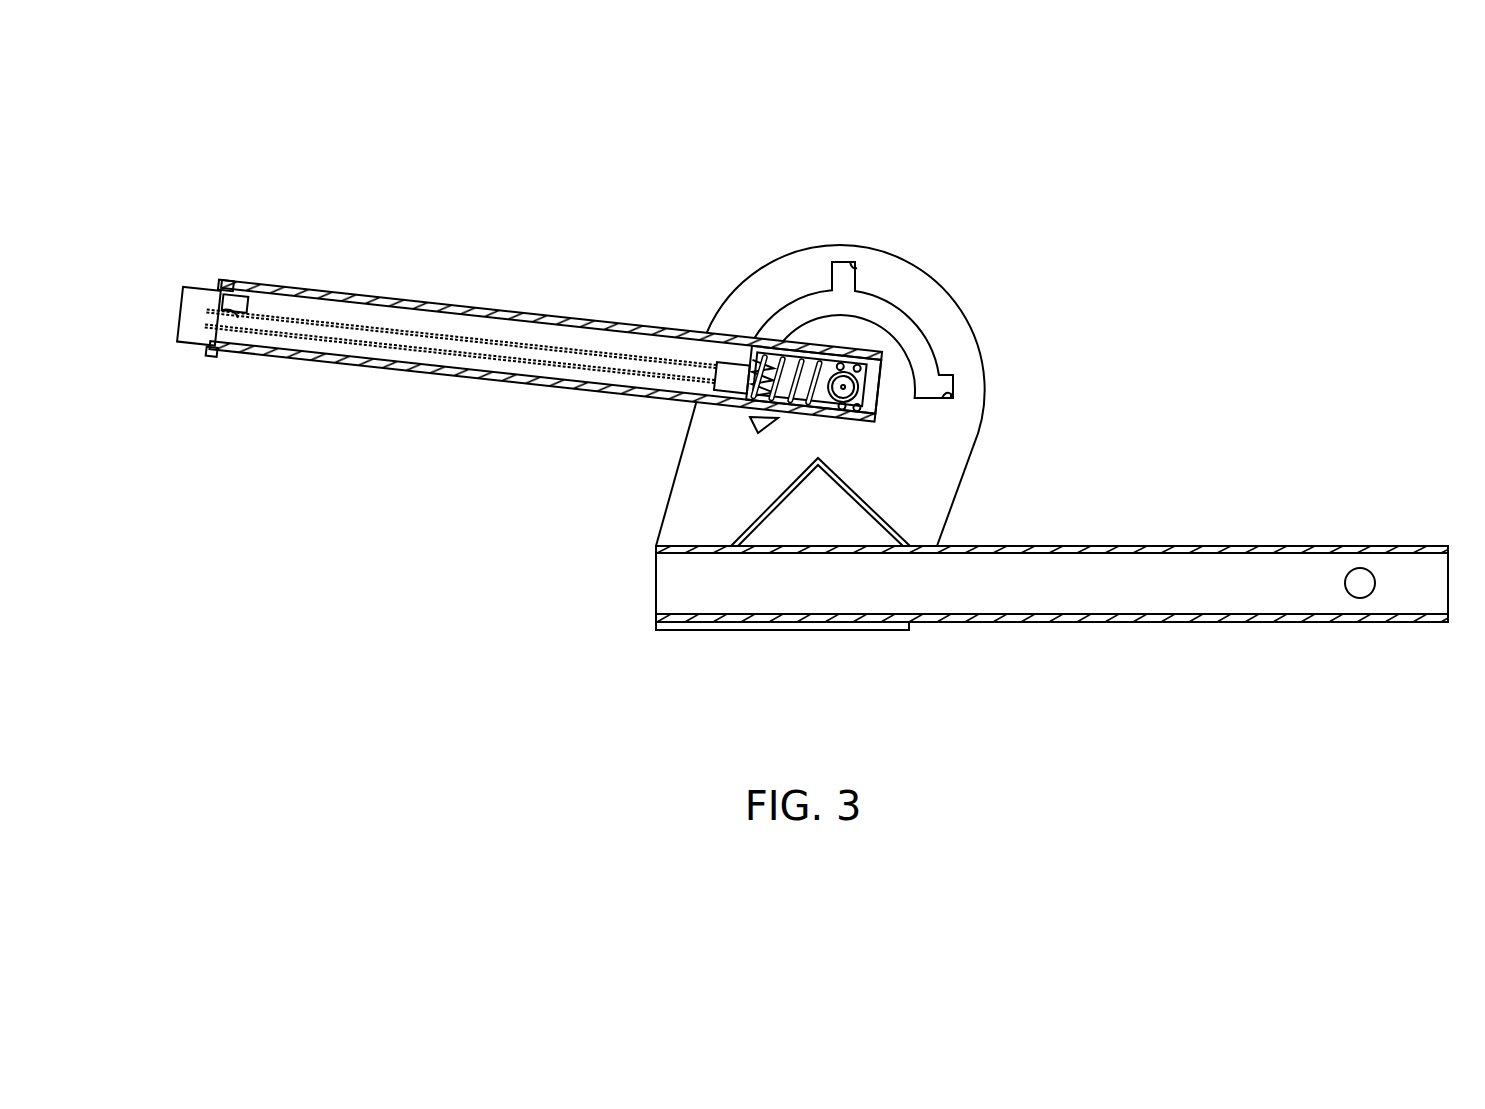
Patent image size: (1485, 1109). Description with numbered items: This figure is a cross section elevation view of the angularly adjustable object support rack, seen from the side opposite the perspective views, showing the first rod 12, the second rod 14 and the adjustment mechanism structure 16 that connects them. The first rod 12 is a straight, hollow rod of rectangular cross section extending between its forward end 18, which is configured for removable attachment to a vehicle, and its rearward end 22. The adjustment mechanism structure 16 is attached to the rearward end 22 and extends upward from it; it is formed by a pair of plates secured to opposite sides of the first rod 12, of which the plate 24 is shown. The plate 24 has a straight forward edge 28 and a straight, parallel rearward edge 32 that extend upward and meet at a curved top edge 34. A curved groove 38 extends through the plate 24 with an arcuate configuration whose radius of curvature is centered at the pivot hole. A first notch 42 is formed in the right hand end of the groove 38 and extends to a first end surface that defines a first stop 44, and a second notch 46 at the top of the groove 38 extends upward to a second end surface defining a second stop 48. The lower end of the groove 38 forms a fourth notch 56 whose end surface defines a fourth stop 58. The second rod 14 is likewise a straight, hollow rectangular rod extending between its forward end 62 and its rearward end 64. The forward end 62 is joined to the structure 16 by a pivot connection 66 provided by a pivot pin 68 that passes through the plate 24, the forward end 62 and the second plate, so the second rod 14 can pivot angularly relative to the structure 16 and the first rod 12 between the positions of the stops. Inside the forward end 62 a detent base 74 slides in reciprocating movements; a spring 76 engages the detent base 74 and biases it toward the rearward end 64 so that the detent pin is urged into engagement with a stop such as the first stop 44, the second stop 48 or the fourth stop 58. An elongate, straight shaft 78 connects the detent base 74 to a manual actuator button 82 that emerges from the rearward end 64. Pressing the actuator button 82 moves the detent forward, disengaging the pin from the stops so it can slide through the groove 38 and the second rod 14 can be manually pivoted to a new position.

The first rod 12 is at (1150, 546).
The second rod 14 is at (345, 290).
The adjustment mechanism structure 16 is at (826, 360).
The forward end 18 is at (1450, 598).
The rearward end 22 is at (656, 580).
The plate 24 is at (811, 373).
The forward edge 28 is at (680, 470).
The rearward edge 32 is at (945, 523).
The curved top edge 34 is at (778, 265).
The curved groove 38 is at (901, 308).
The first notch 42 is at (962, 375).
The first stop 44 is at (950, 395).
The second notch 46 is at (836, 250).
The second stop 48 is at (857, 268).
The fourth notch 56 is at (767, 448).
The fourth stop 58 is at (748, 418).
The forward end 62 is at (880, 405).
The rearward end 64 is at (215, 350).
The pivot connection 66 is at (828, 432).
The pivot pin 68 is at (841, 407).
The detent base 74 is at (738, 360).
The spring 76 is at (795, 362).
The shaft 78 is at (455, 343).
The actuator button 82 is at (185, 294).